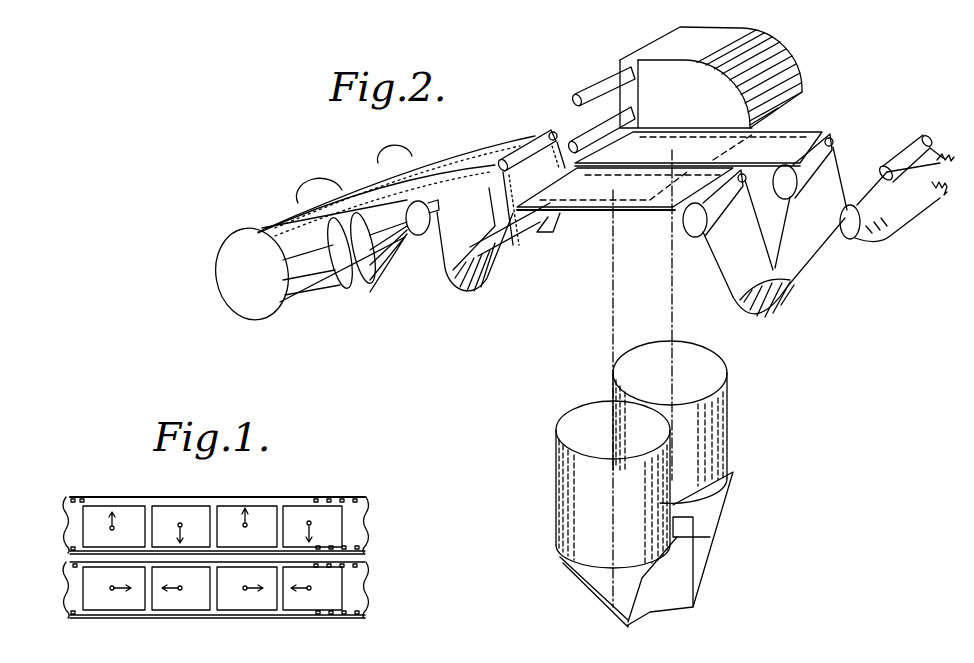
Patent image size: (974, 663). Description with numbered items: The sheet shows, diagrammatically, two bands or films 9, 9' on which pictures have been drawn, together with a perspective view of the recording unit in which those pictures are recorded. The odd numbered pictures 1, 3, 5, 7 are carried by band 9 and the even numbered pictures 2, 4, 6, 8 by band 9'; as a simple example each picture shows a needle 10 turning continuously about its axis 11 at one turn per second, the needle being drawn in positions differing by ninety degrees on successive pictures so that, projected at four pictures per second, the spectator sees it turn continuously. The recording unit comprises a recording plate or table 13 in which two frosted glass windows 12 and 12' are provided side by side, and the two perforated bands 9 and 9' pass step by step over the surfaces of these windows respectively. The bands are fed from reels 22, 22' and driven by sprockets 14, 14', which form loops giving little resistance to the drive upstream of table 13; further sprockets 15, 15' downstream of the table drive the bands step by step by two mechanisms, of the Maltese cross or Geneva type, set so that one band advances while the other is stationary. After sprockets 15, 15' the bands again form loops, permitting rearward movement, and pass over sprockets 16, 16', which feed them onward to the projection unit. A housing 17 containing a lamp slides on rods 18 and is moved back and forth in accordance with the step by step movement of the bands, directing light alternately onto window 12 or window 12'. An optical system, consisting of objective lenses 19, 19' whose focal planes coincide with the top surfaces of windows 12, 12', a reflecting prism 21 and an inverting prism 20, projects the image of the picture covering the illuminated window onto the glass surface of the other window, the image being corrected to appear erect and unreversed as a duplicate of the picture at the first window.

In FIG. 1, the odd numbered picture 1 is at (128, 508).
In FIG. 1, the even numbered picture 2 is at (131, 606).
In FIG. 1, the odd numbered picture 3 is at (184, 508).
In FIG. 1, the even numbered picture 4 is at (196, 606).
In FIG. 1, the odd numbered picture 5 is at (259, 509).
In FIG. 1, the even numbered picture 6 is at (251, 606).
In FIG. 1, the odd numbered picture 7 is at (300, 509).
In FIG. 1, the even numbered picture 8 is at (297, 606).
In FIG. 1, the band or film 9 is at (205, 525).
In FIG. 2, the band or film 9 is at (552, 218).
In FIG. 1, the band or film 9' is at (202, 590).
In FIG. 2, the band or film 9' is at (472, 247).
In FIG. 1, the needle 10 is at (126, 579).
In FIG. 1, the axis 11 is at (100, 588).
In FIG. 2, the frosted glass window 12 is at (698, 306).
In FIG. 2, the frosted glass window 12' is at (625, 387).
In FIG. 2, the recording plate or table 13 is at (673, 206).
In FIG. 2, the sprocket 14 is at (531, 174).
In FIG. 2, the sprocket 14' is at (421, 230).
In FIG. 2, the sprocket 15 is at (803, 181).
In FIG. 2, the sprocket 15' is at (714, 218).
In FIG. 2, the sprocket 16 is at (915, 144).
In FIG. 2, the sprocket 16' is at (893, 219).
In FIG. 2, the housing 17 is at (754, 44).
In FIG. 2, the rods 18 is at (598, 127).
In FIG. 2, the objective lens 19 is at (674, 415).
In FIG. 2, the objective lens 19' is at (613, 474).
In FIG. 2, the inverting prism 20 is at (605, 591).
In FIG. 2, the reflecting prism 21 is at (715, 514).
In FIG. 2, the reel 22 is at (354, 163).
In FIG. 2, the reel 22' is at (308, 263).